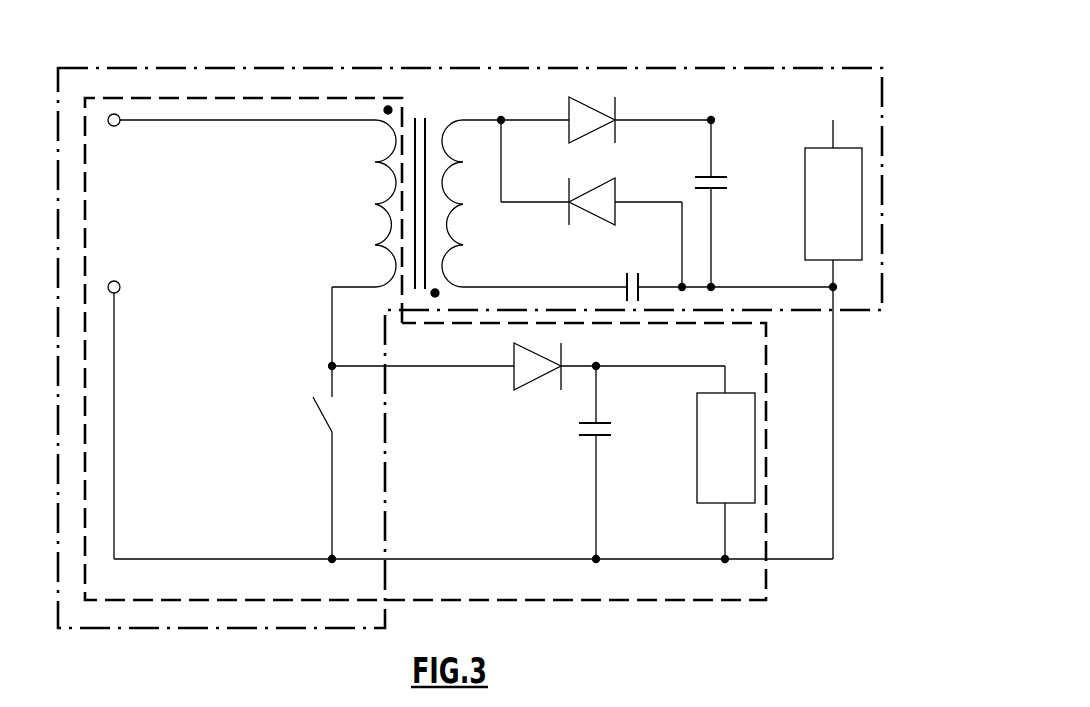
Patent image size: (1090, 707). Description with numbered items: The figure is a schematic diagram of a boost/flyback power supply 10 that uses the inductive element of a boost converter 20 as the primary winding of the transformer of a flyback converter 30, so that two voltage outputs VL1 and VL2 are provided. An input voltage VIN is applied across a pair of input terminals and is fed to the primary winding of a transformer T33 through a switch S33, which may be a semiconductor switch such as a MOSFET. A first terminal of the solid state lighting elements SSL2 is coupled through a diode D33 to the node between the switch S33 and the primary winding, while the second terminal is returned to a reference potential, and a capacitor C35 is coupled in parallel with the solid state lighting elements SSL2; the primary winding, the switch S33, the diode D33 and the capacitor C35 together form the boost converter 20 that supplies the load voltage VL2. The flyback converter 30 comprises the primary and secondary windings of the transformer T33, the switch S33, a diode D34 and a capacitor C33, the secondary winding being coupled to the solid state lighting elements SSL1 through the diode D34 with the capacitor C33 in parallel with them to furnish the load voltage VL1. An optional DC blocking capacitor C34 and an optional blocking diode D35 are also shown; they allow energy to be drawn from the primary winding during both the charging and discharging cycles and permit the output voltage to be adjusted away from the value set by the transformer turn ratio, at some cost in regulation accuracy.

The power supply 10 is at (753, 53).
The boost converter 20 is at (709, 601).
The flyback converter 30 is at (183, 628).
The transformer T33 is at (479, 224).
The switch S33 is at (343, 463).
The diode D33 is at (528, 381).
The diode D34 is at (605, 106).
The blocking diode D35 is at (593, 205).
The capacitor C33 is at (730, 204).
The DC blocking capacitor C34 is at (723, 274).
The capacitor C35 is at (615, 463).
The solid state lighting elements SSL1 is at (833, 205).
The solid state lighting elements SSL2 is at (726, 464).
The input voltage VIN is at (114, 150).
The first voltage output VL1 is at (778, 150).
The second voltage output VL2 is at (671, 393).